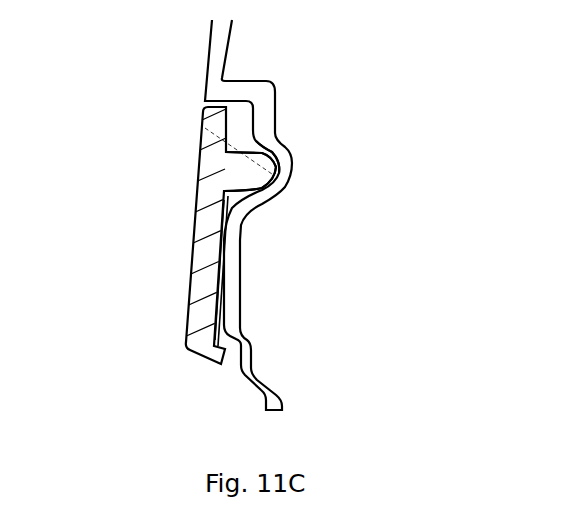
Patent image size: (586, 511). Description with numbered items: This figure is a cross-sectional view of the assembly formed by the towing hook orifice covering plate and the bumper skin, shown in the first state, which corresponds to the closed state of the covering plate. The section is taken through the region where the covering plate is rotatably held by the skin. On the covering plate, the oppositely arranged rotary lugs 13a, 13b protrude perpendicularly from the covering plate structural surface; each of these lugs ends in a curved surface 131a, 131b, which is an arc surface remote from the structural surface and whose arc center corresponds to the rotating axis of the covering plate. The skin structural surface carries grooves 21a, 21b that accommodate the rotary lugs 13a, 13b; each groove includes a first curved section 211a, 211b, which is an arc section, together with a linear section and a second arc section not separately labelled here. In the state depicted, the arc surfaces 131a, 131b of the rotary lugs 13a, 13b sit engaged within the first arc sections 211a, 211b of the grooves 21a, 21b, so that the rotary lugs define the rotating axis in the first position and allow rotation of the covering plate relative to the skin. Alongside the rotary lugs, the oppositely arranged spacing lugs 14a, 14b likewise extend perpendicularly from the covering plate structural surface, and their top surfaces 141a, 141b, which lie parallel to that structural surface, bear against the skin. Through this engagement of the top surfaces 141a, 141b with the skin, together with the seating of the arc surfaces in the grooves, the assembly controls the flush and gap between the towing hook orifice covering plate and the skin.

The rotary lug 13a is at (159, 235).
The rotary lug 13b is at (262, 169).
The curved surface 131a is at (358, 171).
The curved surface 131b is at (281, 168).
The spacing lug 14a is at (308, 275).
The spacing lug 14b is at (219, 284).
The top surface 141a is at (331, 270).
The top surface 141b is at (228, 281).
The groove 21a is at (314, 215).
The groove 21b is at (286, 181).
The first curved section 211a is at (366, 143).
The first curved section 211b is at (283, 150).